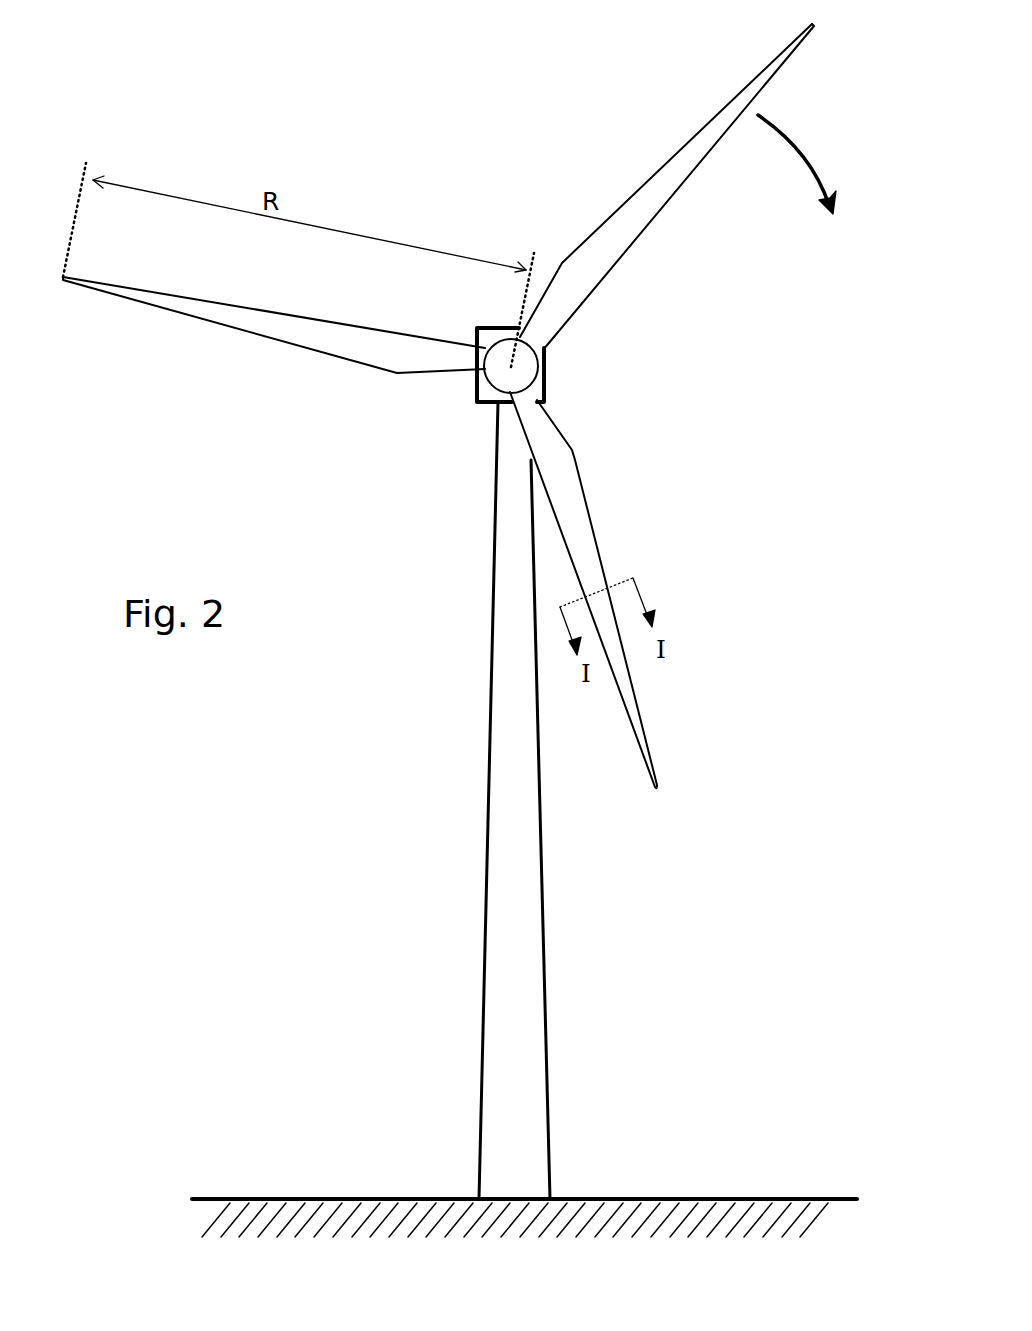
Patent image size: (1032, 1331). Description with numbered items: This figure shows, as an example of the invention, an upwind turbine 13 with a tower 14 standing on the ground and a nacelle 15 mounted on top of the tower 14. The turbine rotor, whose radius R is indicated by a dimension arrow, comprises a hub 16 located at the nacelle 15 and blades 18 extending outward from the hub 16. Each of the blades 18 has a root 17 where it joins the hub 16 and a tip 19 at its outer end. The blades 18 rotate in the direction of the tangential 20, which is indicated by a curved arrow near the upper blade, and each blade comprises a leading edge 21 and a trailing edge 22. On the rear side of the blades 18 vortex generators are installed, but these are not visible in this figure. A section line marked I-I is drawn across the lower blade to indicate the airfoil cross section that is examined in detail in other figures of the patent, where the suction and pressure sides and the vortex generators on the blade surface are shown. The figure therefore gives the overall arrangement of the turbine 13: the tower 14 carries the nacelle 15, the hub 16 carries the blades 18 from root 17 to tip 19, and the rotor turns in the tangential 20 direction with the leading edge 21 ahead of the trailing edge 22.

The upwind turbine 13 is at (737, 420).
The tower 14 is at (528, 908).
The nacelle 15 is at (542, 385).
The hub 16 is at (525, 363).
The root 17 is at (457, 363).
The blades 18 is at (272, 320).
The tip 19 is at (653, 760).
The tangential 20 is at (807, 155).
The leading edge 21 is at (648, 222).
The trailing edge 22 is at (614, 209).